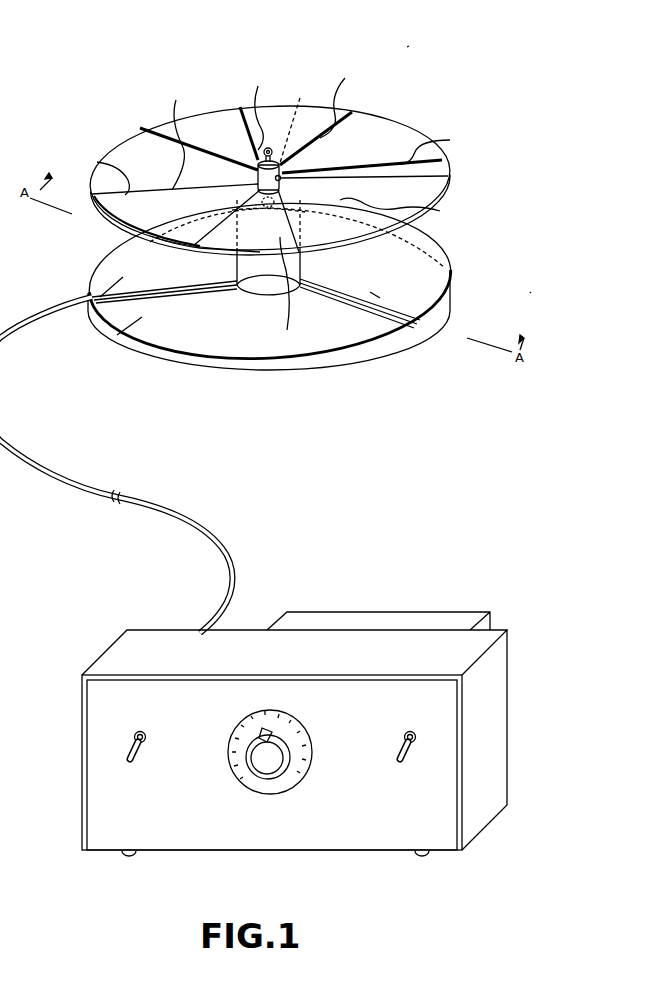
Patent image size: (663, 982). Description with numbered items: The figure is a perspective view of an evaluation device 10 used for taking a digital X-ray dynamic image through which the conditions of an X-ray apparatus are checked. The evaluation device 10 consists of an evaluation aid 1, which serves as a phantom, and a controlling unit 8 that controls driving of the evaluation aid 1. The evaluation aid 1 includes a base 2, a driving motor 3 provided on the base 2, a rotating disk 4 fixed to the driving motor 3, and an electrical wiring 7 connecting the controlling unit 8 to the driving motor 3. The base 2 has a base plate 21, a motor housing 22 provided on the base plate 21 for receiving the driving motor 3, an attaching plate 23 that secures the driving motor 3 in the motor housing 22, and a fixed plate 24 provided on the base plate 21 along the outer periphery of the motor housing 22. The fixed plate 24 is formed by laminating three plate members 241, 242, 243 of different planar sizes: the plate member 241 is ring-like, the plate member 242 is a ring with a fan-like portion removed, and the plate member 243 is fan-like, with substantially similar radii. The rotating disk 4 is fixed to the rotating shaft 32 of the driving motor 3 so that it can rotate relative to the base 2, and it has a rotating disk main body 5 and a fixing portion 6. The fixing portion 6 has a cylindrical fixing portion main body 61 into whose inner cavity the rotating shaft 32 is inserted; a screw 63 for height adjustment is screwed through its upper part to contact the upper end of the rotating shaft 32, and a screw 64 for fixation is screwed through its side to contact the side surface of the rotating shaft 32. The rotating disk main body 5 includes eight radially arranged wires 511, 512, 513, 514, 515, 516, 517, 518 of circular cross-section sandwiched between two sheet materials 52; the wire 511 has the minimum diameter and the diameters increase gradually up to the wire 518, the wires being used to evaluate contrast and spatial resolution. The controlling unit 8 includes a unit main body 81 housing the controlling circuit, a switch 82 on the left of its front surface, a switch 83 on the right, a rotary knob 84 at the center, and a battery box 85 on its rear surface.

The evaluation aid 1 is at (407, 47).
The evaluation device 10 is at (530, 293).
The base 2 is at (458, 264).
The base plate 21 is at (362, 354).
The motor housing 22 is at (258, 285).
The attaching plate 23 is at (172, 340).
The fixed plate 24 is at (32, 368).
The plate member 241 is at (100, 297).
The plate member 242 is at (117, 335).
The plate member 243 is at (370, 292).
The driving motor 3 is at (303, 226).
The rotating shaft 32 is at (299, 118).
The rotating disk 4 is at (206, 106).
The rotating disk main body 5 is at (410, 126).
The wire 511 is at (440, 211).
The wire 512 is at (284, 292).
The wire 513 is at (150, 236).
The wire 514 is at (97, 162).
The wire 515 is at (166, 137).
The wire 516 is at (256, 110).
The wire 517 is at (337, 99).
The wire 518 is at (438, 146).
The sheet material 52 is at (350, 132).
The fixing portion 6 is at (252, 158).
The fixing portion main body 61 is at (140, 128).
The screw for height adjustment 63 is at (270, 148).
The screw for fixation 64 is at (446, 176).
The electrical wiring 7 is at (42, 302).
The controlling unit 8 is at (480, 594).
The unit main body 81 is at (349, 815).
The switch 82 is at (130, 752).
The switch 83 is at (405, 752).
The rotary knob 84 is at (264, 767).
The battery box 85 is at (357, 620).